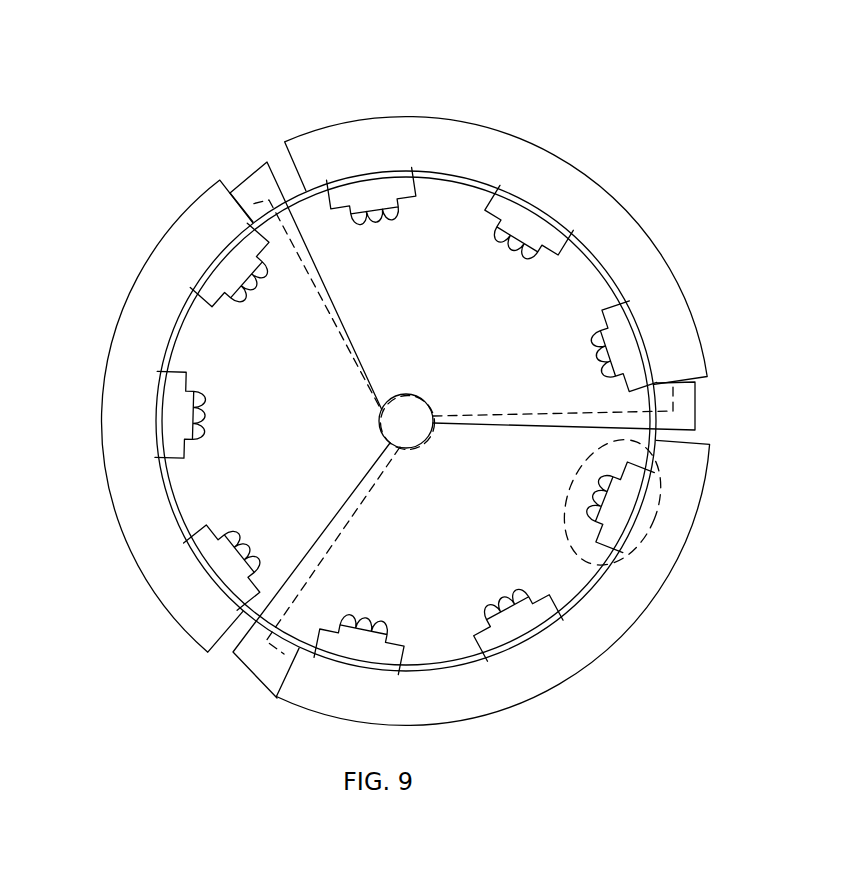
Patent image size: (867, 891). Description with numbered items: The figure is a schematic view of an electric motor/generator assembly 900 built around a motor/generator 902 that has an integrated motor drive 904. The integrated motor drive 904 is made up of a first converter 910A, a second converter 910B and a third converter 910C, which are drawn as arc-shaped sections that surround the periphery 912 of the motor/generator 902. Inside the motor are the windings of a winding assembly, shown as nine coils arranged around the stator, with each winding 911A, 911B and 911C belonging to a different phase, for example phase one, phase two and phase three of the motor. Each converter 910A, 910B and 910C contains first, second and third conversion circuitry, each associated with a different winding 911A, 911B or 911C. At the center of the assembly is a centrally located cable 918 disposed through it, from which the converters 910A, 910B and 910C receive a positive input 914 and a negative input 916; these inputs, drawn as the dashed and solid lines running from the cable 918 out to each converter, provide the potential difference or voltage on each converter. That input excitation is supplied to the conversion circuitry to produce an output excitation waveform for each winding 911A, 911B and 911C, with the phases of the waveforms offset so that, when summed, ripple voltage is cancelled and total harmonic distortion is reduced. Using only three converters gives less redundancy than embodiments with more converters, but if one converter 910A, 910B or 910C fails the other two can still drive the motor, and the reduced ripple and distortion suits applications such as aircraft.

The electric motor/generator assembly 900 is at (598, 59).
The motor/generator 902 is at (592, 252).
The integrated motor drive 904 is at (590, 158).
The first converter 910A is at (488, 128).
The second converter 910B is at (624, 621).
The third converter 910C is at (186, 633).
The winding 911A is at (594, 345).
The winding 911B is at (503, 247).
The winding 911C is at (372, 228).
The periphery 912 is at (166, 496).
The positive input 914 is at (337, 331).
The negative input 916 is at (340, 328).
The centrally located cable 918 is at (406, 394).